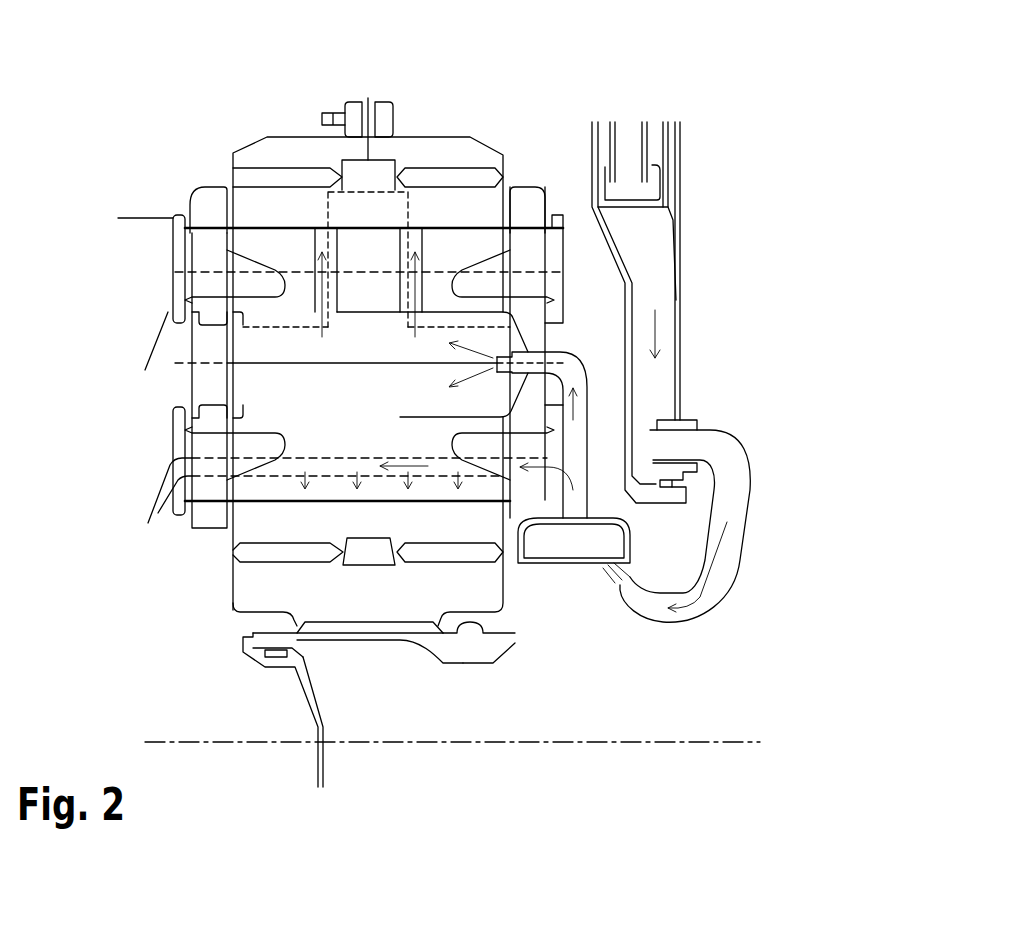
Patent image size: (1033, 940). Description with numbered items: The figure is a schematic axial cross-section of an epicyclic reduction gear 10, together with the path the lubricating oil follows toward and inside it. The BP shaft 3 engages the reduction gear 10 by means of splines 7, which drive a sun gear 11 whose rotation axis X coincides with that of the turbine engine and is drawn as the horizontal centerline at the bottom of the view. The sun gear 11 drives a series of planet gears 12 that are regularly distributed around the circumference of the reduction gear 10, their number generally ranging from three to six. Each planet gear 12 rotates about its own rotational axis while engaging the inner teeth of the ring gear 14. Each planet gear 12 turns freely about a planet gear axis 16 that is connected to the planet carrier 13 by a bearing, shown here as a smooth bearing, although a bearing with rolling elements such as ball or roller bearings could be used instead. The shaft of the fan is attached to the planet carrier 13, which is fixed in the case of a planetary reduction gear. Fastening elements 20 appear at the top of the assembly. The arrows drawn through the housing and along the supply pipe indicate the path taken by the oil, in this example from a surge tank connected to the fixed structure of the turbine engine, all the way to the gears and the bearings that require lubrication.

The reduction gear 10 is at (205, 100).
The screw 20 is at (363, 98).
The ring gear 14 is at (478, 160).
The planet gears 12 is at (493, 197).
The planet carrier 13 is at (207, 205).
The planet gear axis 16 is at (362, 288).
The sun gear 11 is at (257, 580).
The splines 7 is at (357, 638).
The BP shaft 3 is at (468, 645).
The rotation axis X is at (178, 743).